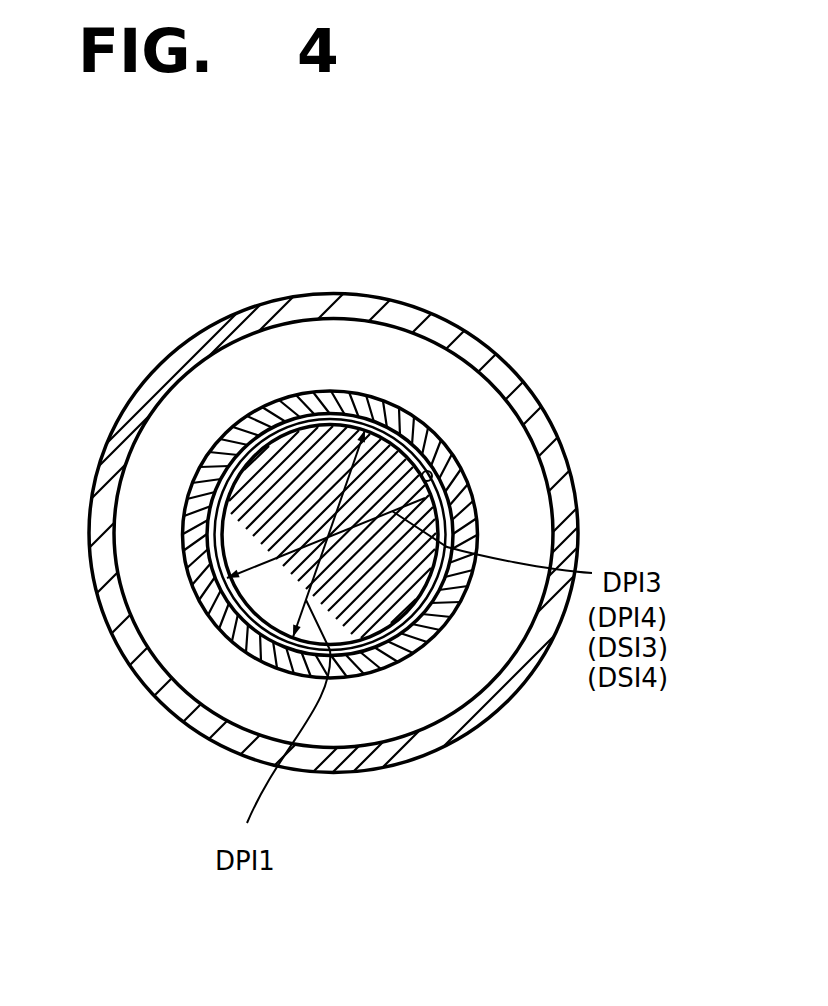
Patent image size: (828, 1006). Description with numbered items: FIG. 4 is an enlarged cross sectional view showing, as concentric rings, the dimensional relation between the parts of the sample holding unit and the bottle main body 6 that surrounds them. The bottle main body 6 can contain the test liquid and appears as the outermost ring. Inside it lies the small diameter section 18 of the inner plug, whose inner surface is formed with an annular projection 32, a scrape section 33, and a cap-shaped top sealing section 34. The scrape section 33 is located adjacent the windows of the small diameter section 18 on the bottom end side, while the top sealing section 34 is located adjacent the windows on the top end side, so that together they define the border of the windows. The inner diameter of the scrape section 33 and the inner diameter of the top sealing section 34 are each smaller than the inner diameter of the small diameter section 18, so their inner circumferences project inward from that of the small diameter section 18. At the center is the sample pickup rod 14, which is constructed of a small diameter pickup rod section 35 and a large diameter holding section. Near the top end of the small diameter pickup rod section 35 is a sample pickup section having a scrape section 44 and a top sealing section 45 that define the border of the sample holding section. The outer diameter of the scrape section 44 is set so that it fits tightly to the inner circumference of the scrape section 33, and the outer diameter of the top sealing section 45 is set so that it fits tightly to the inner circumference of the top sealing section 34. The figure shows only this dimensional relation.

The bottle main body 6 is at (421, 308).
The small diameter section 18 is at (392, 558).
The sample pickup rod 14 is at (392, 621).
The small diameter pickup rod section 35 is at (392, 621).
The annular projection 32 is at (440, 628).
The scrape section 33 is at (456, 515).
The top sealing section 34 is at (431, 474).
The scrape section 44 is at (464, 535).
The top sealing section 45 is at (440, 497).